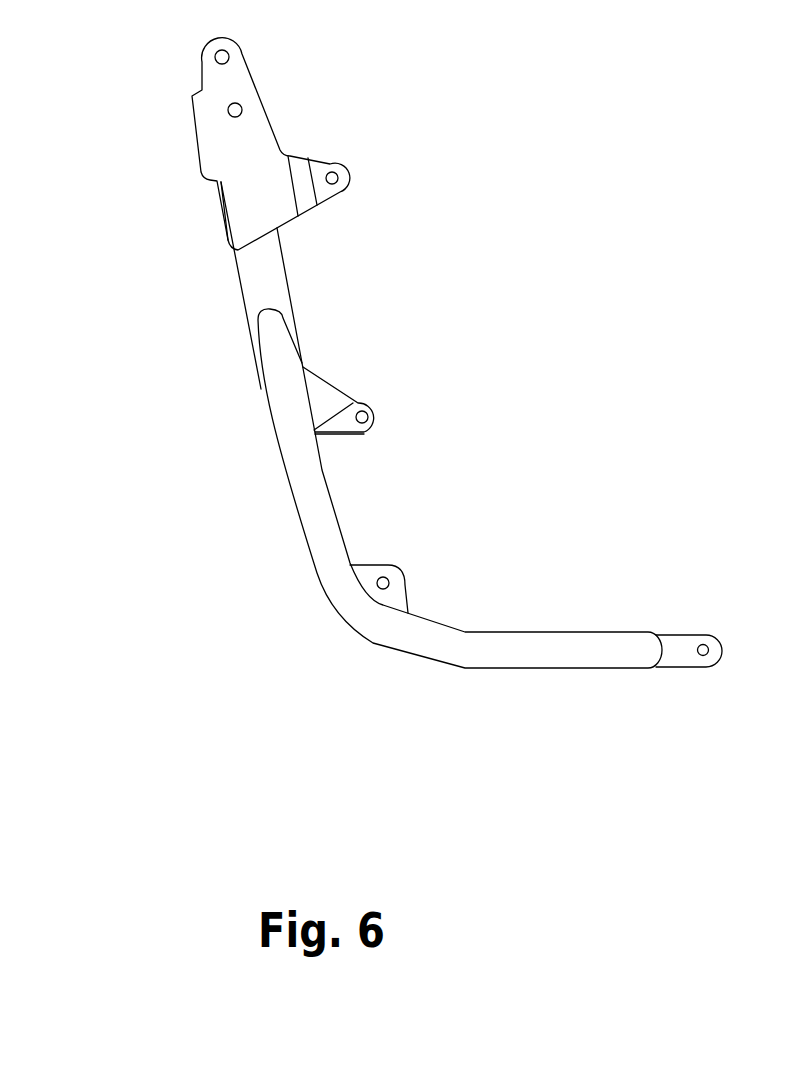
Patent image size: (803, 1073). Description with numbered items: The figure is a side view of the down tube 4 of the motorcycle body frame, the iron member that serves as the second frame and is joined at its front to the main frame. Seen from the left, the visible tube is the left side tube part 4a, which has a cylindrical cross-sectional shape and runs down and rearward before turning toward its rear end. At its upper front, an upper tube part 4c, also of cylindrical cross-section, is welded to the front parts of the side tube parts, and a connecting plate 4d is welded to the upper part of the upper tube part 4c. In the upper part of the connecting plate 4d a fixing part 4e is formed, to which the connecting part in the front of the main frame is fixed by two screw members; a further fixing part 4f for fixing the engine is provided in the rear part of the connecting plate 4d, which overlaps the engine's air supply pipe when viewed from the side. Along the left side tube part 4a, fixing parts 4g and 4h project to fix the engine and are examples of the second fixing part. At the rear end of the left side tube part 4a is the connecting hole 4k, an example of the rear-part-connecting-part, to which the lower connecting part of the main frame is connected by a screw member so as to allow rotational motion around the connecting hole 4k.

The down tube 4 is at (250, 293).
The left side tube part 4a is at (318, 542).
The upper tube part 4c is at (248, 268).
The connecting plate 4d is at (222, 143).
The fixing part 4e is at (223, 82).
The fixing part 4f is at (320, 167).
The fixing part 4g is at (350, 405).
The fixing part 4h is at (365, 578).
The connecting hole 4k is at (710, 658).